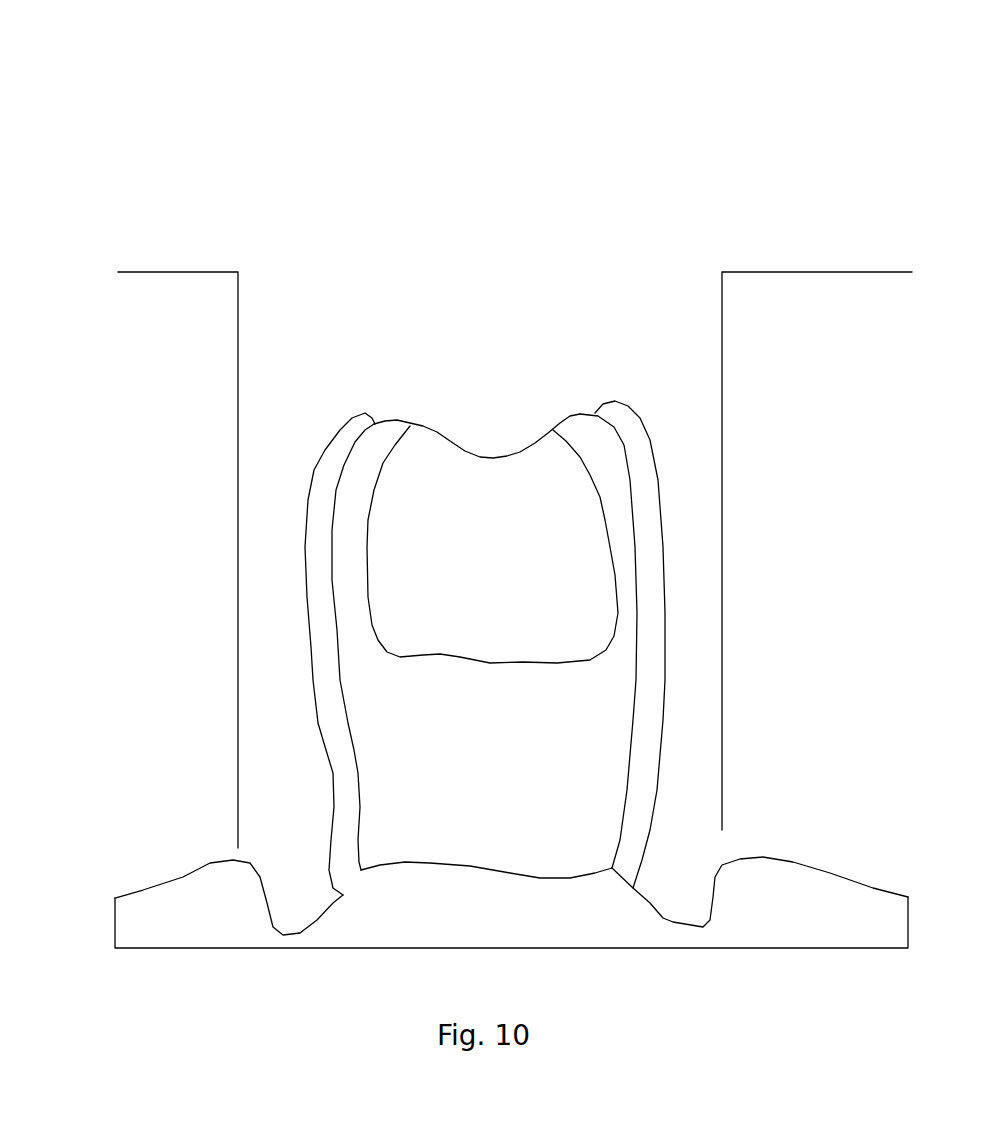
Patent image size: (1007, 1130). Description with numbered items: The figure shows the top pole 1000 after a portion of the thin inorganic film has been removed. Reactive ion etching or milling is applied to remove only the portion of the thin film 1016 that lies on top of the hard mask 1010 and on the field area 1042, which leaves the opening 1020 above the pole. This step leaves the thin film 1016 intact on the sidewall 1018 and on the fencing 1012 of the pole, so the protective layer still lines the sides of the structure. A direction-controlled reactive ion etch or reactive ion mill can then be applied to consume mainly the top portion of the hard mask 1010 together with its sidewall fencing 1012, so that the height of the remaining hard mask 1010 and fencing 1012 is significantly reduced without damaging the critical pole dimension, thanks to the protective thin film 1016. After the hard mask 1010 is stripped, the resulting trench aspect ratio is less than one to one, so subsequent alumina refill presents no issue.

The top pole 1000 is at (228, 148).
The hard mask 1010 is at (493, 508).
The fencing 1012 is at (597, 452).
The thin film 1016 is at (648, 532).
The sidewall 1018 is at (632, 705).
The opening 1020 is at (507, 420).
The field area 1042 is at (782, 837).